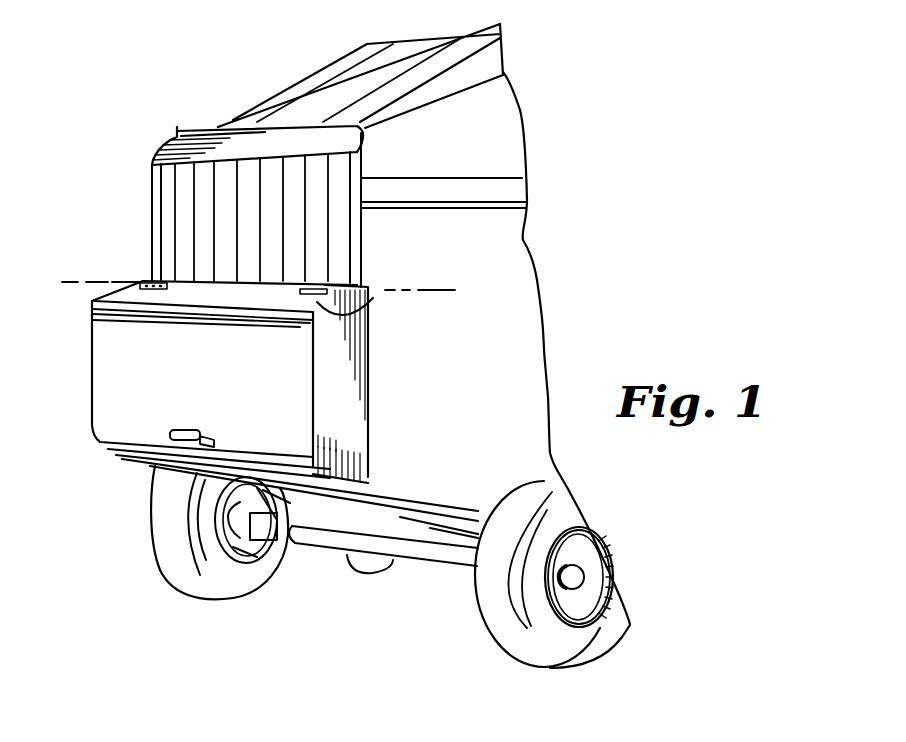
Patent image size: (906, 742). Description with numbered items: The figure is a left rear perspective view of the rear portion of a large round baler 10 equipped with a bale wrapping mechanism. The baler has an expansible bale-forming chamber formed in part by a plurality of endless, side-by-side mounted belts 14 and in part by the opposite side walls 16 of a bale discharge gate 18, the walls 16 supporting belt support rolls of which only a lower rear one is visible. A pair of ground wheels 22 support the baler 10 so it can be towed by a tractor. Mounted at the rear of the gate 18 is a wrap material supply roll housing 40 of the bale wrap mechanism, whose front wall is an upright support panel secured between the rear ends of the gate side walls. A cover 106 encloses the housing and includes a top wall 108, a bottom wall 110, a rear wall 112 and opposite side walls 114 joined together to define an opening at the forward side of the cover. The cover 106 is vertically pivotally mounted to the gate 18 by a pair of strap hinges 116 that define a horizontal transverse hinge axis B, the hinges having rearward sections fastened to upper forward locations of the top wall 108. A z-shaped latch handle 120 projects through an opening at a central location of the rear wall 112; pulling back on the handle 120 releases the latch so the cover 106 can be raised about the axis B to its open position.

The large round baler 10 is at (597, 213).
The belts 14 is at (367, 95).
The side walls 16 is at (474, 343).
The bale discharge gate 18 is at (546, 369).
The ground wheels 22 is at (267, 595).
The wrap material supply roll housing 40 is at (82, 393).
The cover 106 is at (91, 427).
The top wall 108 is at (244, 300).
The bottom wall 110 is at (160, 458).
The rear wall 112 is at (276, 405).
The side walls 114 is at (93, 332).
The strap hinges 116 is at (137, 288).
The latch handle 120 is at (188, 429).
The hinge axis B is at (440, 288).